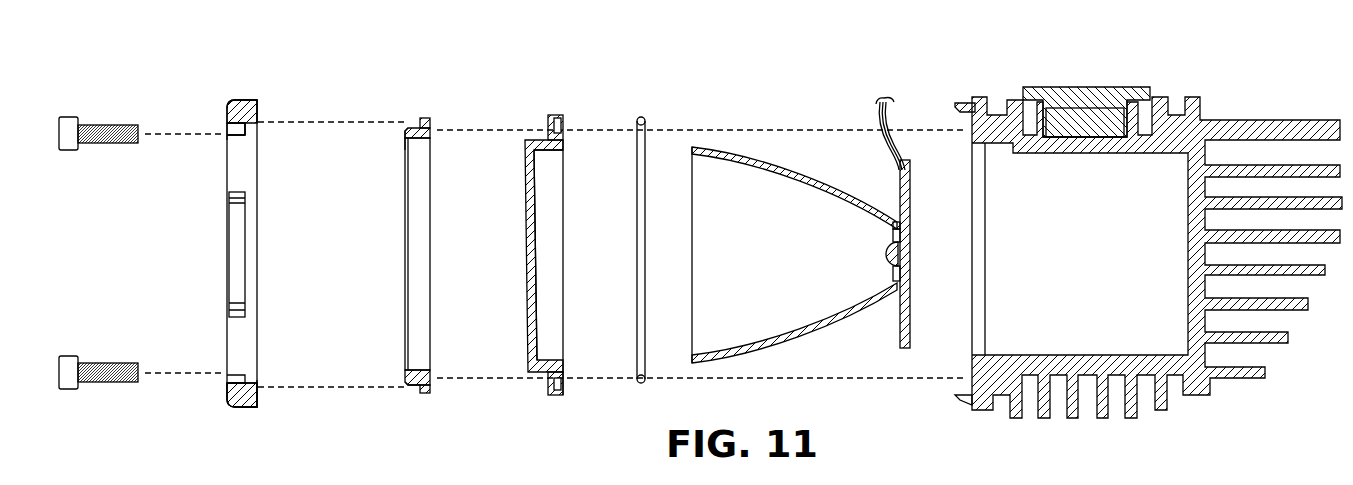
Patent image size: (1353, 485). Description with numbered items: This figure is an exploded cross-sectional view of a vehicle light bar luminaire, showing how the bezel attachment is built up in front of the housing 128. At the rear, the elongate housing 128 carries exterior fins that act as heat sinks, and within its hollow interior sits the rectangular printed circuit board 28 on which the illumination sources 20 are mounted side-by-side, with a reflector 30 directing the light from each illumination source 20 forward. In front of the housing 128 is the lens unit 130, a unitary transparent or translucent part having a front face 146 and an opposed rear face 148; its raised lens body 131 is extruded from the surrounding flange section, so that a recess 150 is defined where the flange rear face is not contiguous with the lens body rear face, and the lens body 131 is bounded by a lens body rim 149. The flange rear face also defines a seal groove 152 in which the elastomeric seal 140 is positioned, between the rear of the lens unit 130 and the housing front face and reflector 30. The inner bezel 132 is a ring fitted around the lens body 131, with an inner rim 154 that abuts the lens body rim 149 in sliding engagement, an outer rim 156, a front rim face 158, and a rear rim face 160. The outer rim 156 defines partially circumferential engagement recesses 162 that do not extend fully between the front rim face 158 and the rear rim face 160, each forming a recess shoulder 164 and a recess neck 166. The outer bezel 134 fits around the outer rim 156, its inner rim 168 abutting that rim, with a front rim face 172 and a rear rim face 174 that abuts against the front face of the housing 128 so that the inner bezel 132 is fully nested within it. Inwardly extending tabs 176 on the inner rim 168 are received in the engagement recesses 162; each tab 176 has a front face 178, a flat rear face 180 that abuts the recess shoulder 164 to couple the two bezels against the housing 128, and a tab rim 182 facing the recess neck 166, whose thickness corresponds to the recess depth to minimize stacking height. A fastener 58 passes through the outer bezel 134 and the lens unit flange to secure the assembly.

The illumination source 20 is at (885, 250).
The printed circuit board 28 is at (912, 318).
The reflector 30 is at (761, 165).
The fastener 58 is at (98, 123).
The housing 128 is at (1197, 123).
The lens unit 130 is at (581, 101).
The lens body 131 is at (713, 240).
The inner bezel 132 is at (425, 118).
The outer bezel 134 is at (240, 100).
The elastomeric seal 140 is at (245, 407).
The front face 146 is at (546, 128).
The rear face 148 is at (565, 141).
The lens body rim 149 is at (541, 378).
The recess 150 is at (550, 285).
The seal groove 152 is at (568, 125).
The inner rim 154 is at (403, 371).
The outer rim 156 is at (428, 393).
The front rim face 158 is at (402, 135).
The rear rim face 160 is at (421, 264).
The engagement recess 162 is at (411, 390).
The recess shoulder 164 is at (412, 126).
The recess neck 166 is at (407, 128).
The inner rim 168 is at (245, 147).
The front rim face 172 is at (396, 260).
The rear rim face 174 is at (265, 405).
The tab 176 is at (228, 127).
The front face 178 is at (227, 134).
The flat rear face 180 is at (246, 130).
The tab rim 182 is at (227, 140).